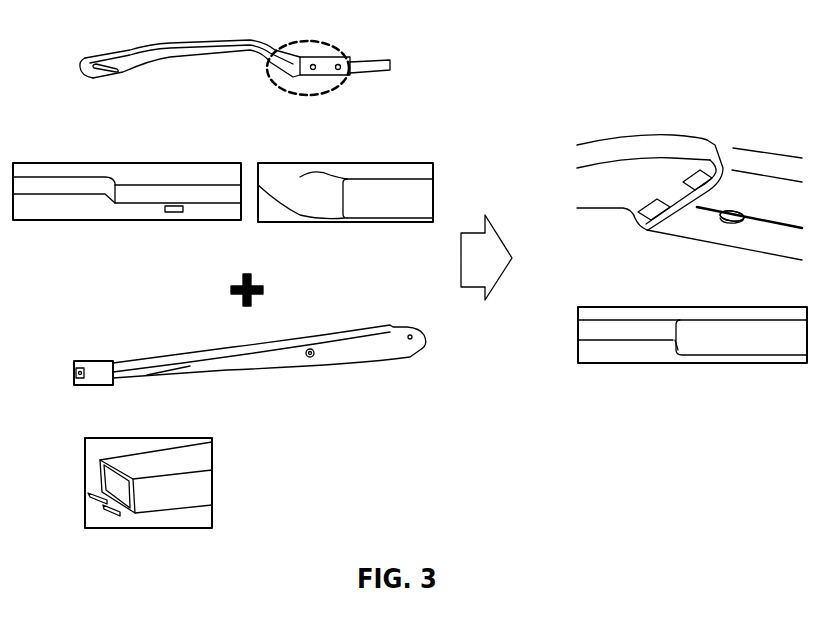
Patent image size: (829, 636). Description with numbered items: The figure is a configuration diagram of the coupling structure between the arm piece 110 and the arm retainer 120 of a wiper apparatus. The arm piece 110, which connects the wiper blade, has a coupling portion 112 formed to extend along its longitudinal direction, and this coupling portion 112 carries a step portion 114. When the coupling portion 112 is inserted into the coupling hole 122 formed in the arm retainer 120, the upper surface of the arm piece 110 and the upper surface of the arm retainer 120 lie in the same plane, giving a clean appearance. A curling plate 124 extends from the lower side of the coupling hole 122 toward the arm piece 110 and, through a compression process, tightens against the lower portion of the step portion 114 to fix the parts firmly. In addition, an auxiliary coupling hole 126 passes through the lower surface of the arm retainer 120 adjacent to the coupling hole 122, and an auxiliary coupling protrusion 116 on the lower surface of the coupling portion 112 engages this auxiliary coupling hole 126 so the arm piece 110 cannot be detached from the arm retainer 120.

The arm piece 110 is at (132, 50).
The coupling portion 112 is at (332, 63).
The step portion 114 is at (107, 205).
The auxiliary coupling protrusion 116 is at (175, 214).
The arm retainer 120 is at (300, 347).
The coupling hole 122 is at (115, 480).
The curling plate 124 is at (105, 508).
The auxiliary coupling hole 126 is at (743, 218).